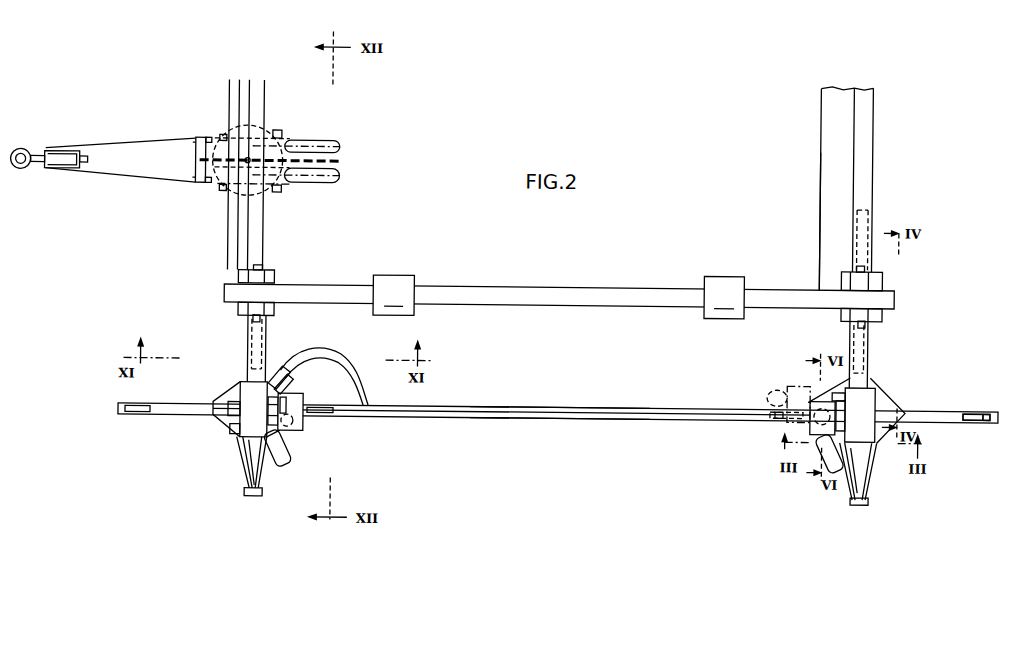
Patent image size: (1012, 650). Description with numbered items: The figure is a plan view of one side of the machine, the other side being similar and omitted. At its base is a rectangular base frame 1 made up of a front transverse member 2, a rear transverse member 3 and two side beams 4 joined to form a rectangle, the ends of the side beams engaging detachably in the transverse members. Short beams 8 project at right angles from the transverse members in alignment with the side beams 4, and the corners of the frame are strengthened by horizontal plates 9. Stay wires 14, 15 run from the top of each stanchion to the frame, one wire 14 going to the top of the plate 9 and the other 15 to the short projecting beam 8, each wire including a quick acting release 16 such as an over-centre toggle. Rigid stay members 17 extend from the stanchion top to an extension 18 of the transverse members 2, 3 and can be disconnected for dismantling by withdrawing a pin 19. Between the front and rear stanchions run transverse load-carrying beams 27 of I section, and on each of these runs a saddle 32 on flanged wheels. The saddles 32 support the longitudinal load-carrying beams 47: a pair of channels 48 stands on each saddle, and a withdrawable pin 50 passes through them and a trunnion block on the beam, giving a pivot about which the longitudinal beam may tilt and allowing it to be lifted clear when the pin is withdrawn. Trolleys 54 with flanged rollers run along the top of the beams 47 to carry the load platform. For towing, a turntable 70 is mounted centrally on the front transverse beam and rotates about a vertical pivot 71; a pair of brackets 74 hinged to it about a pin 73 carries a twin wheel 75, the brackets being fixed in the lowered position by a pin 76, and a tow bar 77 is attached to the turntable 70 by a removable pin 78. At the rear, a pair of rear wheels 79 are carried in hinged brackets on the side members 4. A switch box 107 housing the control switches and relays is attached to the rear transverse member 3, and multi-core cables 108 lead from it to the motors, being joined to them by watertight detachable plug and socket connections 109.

The rectangular base frame 1 is at (502, 404).
The front transverse member 2 is at (250, 341).
The rear transverse member 3 is at (866, 350).
The side beam 4 is at (626, 419).
The short beam 8 is at (160, 407).
The horizontal plate 9 is at (290, 397).
The stay wire 14 is at (571, 413).
The stay wire 15 is at (935, 411).
The quick acting release 16 is at (975, 411).
The rigid stay member 17 is at (238, 466).
The extension 18 is at (250, 477).
The pin 19 is at (264, 496).
The transverse load-carrying beam 27 is at (259, 236).
The saddle 32 is at (257, 272).
The longitudinal load-carrying beam 47 is at (562, 287).
The channel 48 is at (275, 278).
The withdrawable pin 50 is at (248, 318).
The trolley 54 is at (558, 296).
The turntable 70 is at (263, 137).
The vertical pivot 71 is at (244, 167).
The pin 73 is at (273, 136).
The bracket 74 is at (283, 141).
The twin wheel 75 is at (192, 163).
The pin 76 is at (214, 191).
The tow bar 77 is at (139, 146).
The removable pin 78 is at (193, 141).
The rear wheel 79 is at (776, 390).
The switch box 107 is at (825, 194).
The multi-core cable 108 is at (330, 358).
The plug and socket connection 109 is at (276, 371).